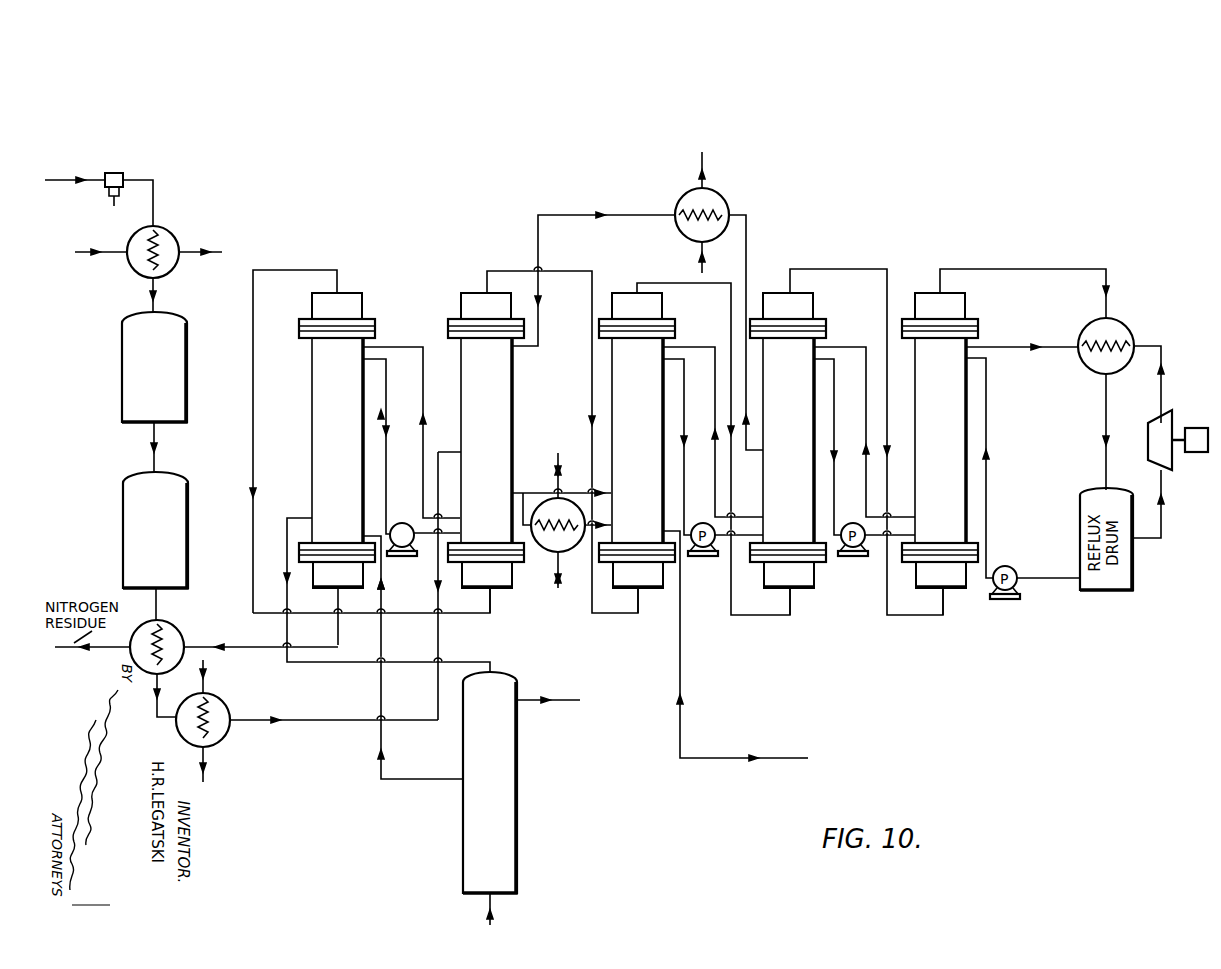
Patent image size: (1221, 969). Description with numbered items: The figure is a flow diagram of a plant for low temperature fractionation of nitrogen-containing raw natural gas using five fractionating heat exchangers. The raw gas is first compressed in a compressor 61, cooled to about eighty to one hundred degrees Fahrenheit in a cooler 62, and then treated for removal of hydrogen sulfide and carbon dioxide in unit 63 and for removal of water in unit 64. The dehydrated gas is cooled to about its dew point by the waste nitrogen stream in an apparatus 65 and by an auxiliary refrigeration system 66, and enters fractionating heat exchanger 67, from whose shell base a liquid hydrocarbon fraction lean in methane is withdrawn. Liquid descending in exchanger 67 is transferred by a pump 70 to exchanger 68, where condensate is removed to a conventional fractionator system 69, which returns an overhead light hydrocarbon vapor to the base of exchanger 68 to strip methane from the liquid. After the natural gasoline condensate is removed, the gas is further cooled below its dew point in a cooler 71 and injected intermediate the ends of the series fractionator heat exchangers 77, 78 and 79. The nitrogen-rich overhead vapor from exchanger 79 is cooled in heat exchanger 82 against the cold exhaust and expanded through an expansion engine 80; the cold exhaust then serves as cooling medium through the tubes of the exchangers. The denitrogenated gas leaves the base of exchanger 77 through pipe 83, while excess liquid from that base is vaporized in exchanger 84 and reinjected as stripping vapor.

The compressor 61 is at (121, 175).
The cooler 62 is at (139, 270).
The unit 63 is at (122, 395).
The unit 64 is at (122, 563).
The apparatus 65 is at (181, 639).
The auxiliary refrigeration system 66 is at (222, 707).
The fractionating heat exchanger 67 is at (513, 416).
The fractionating heat exchanger 68 is at (312, 414).
The conventional fractionator system 69 is at (519, 811).
The pump 70 is at (387, 556).
The cooler 71 is at (718, 201).
The fractionator heat exchanger 77 is at (664, 313).
The fractionator heat exchanger 78 is at (816, 313).
The fractionator heat exchanger 79 is at (966, 311).
The expansion engine 80 is at (1172, 421).
The heat exchanger 82 is at (1118, 330).
The pipe 83 is at (747, 762).
The heat exchanger 84 is at (554, 558).